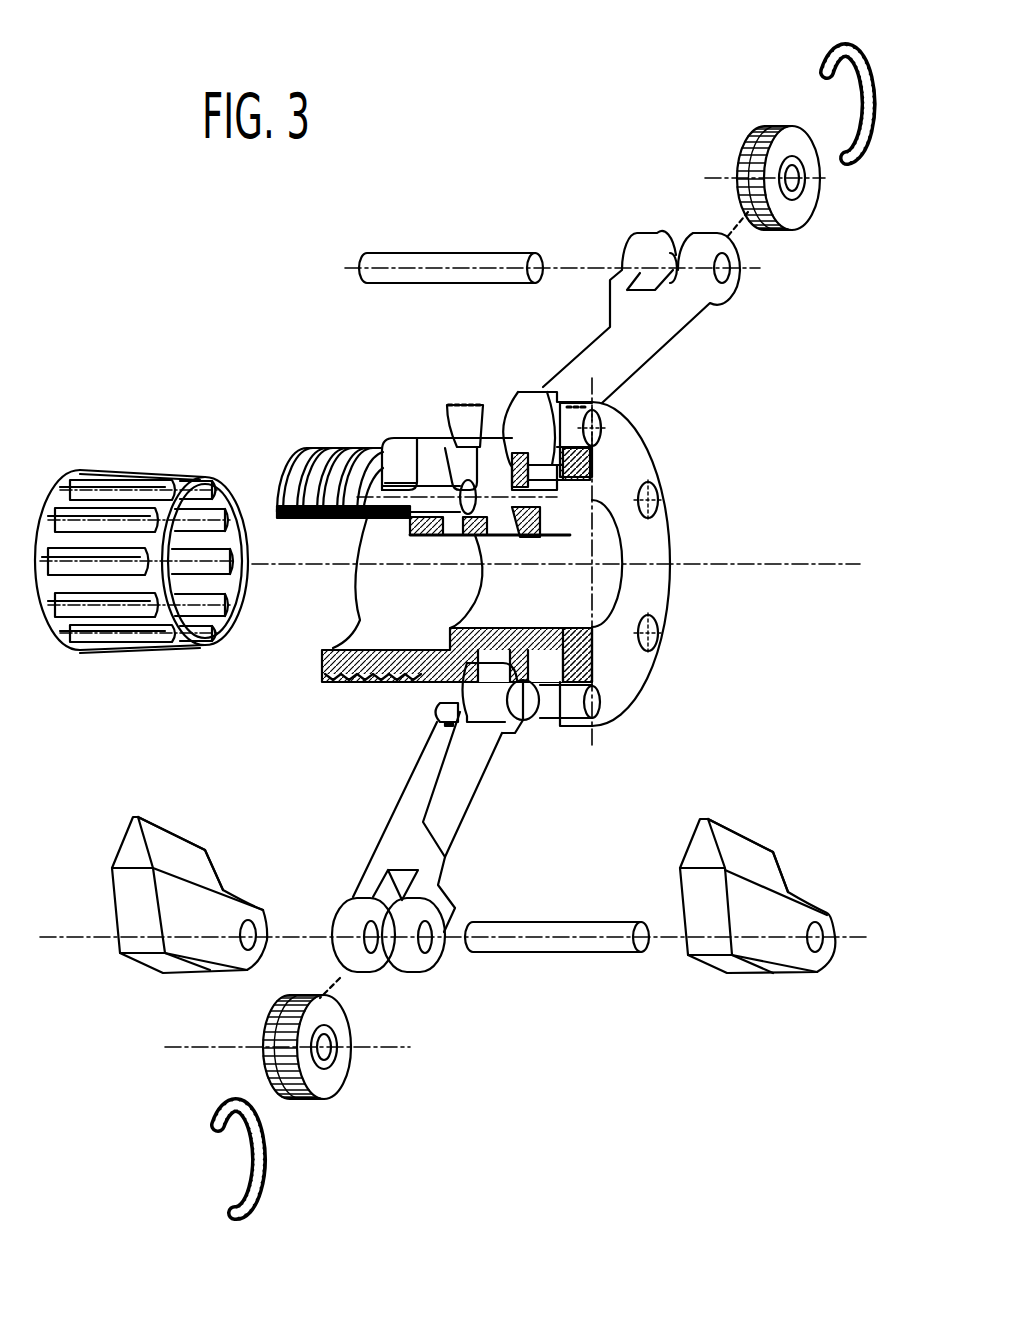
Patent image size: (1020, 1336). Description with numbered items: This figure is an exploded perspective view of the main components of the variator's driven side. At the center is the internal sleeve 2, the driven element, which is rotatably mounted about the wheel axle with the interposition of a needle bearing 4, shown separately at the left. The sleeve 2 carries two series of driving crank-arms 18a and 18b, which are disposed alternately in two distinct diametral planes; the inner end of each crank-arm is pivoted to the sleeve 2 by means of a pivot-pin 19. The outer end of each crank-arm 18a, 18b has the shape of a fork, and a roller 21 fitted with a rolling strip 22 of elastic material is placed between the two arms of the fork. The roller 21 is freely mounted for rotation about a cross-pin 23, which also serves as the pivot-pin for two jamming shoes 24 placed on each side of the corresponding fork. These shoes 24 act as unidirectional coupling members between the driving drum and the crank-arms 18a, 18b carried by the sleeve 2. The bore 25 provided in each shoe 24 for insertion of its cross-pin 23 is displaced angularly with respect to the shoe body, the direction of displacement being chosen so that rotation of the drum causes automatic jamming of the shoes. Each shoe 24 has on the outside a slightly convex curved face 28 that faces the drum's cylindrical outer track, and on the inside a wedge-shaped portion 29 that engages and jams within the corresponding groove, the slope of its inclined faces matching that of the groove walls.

The internal sleeve 2 is at (655, 545).
The needle bearing 4 is at (170, 470).
The driving crank-arm 18a is at (648, 352).
The driving crank-arm 18b is at (415, 813).
The pivot-pin 19 is at (600, 441).
The roller 21 is at (805, 210).
The rolling strip 22 is at (822, 64).
The cross-pin 23 is at (500, 258).
The jamming shoe 24 is at (167, 895).
The bore 25 is at (252, 924).
The convex curved face 28 is at (172, 982).
The wedge-shaped portion 29 is at (180, 858).